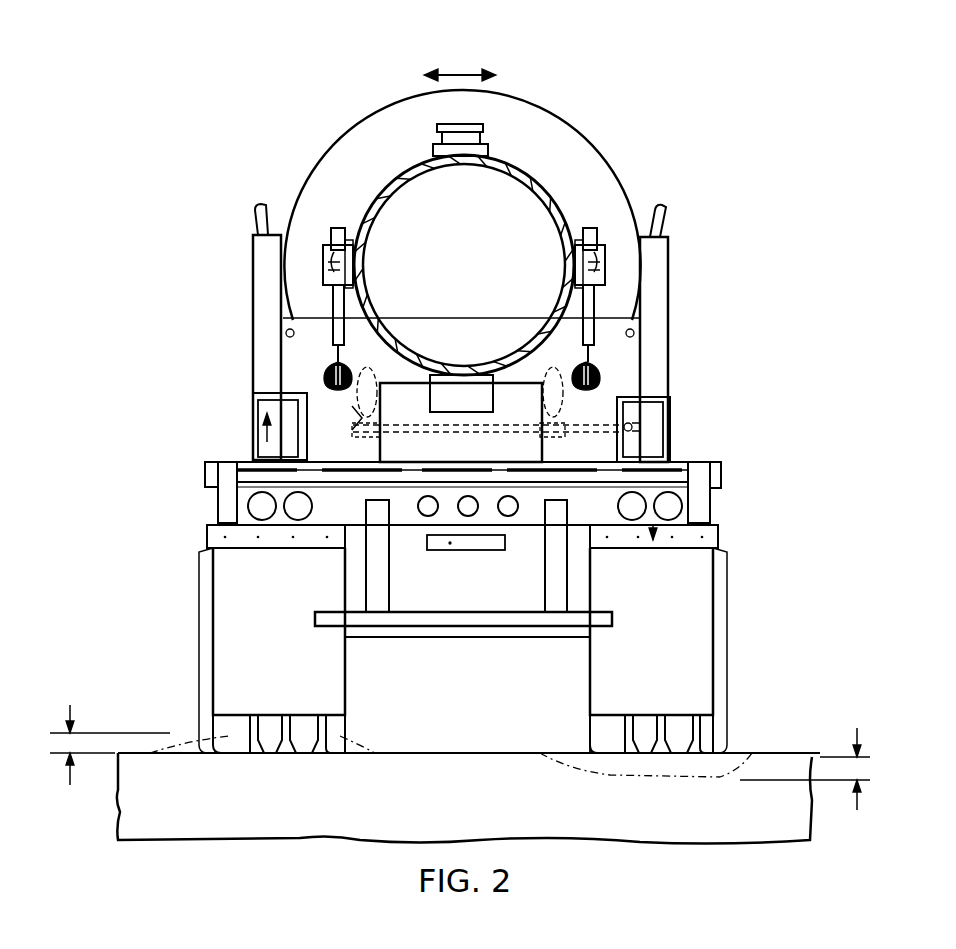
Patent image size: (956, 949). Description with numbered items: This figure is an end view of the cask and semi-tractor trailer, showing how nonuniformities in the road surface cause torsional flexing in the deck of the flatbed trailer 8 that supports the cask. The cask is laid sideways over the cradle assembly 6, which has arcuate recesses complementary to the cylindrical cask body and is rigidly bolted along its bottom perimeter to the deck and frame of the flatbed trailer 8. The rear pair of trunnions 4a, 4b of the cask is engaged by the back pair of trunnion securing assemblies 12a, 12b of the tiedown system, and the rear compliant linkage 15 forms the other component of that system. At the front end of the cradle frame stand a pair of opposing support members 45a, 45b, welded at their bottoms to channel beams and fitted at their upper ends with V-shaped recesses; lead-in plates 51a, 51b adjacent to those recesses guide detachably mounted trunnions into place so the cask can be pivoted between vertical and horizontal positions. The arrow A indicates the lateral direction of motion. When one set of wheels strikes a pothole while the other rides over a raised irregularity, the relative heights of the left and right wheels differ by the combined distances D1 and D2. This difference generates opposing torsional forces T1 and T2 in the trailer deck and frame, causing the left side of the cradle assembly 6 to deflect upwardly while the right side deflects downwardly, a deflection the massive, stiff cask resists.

The lateral movement direction A is at (457, 72).
The rear trunnion 4a is at (325, 256).
The rear trunnion 4b is at (600, 257).
The cradle assembly 6 is at (352, 405).
The flatbed trailer 8 is at (404, 516).
The trunnion securing assembly 12a is at (326, 297).
The trunnion securing assembly 12b is at (597, 302).
The rear compliant linkage 15 is at (577, 418).
The support member 45a is at (265, 290).
The support member 45b is at (662, 268).
The lead-in plate 51a is at (255, 210).
The lead-in plate 51b is at (662, 214).
The torsional force T1 is at (264, 432).
The torsional force T2 is at (653, 525).
The vertical displacement distance D1 is at (72, 703).
The vertical displacement distance D2 is at (857, 735).